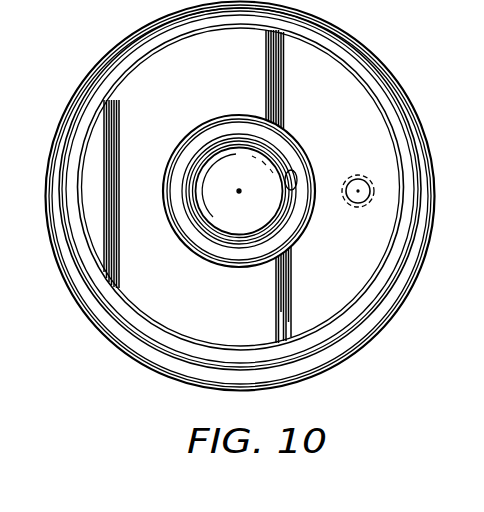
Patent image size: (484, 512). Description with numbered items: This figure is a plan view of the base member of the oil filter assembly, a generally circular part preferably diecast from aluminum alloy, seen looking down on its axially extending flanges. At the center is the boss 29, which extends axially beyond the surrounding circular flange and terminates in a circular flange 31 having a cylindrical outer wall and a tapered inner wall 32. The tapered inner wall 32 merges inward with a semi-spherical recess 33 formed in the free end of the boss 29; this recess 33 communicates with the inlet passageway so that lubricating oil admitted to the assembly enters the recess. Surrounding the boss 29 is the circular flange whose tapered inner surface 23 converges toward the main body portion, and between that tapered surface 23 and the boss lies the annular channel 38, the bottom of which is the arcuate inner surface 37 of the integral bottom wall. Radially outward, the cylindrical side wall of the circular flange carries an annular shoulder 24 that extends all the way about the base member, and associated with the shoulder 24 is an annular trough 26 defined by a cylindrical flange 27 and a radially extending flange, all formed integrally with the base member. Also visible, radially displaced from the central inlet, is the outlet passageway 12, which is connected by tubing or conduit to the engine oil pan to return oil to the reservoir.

The outlet passageway 12 is at (361, 182).
The tapered inner surface 23 is at (167, 345).
The shoulder 24 is at (72, 265).
The annular trough 26 is at (132, 347).
The cylindrical flange 27 is at (82, 310).
The boss 29 is at (212, 118).
The flange 31 is at (295, 233).
The tapered inner wall 32 is at (288, 172).
The semi-spherical recess 33 is at (282, 208).
The arcuate inner surface 37 is at (224, 316).
The annular channel 38 is at (215, 340).